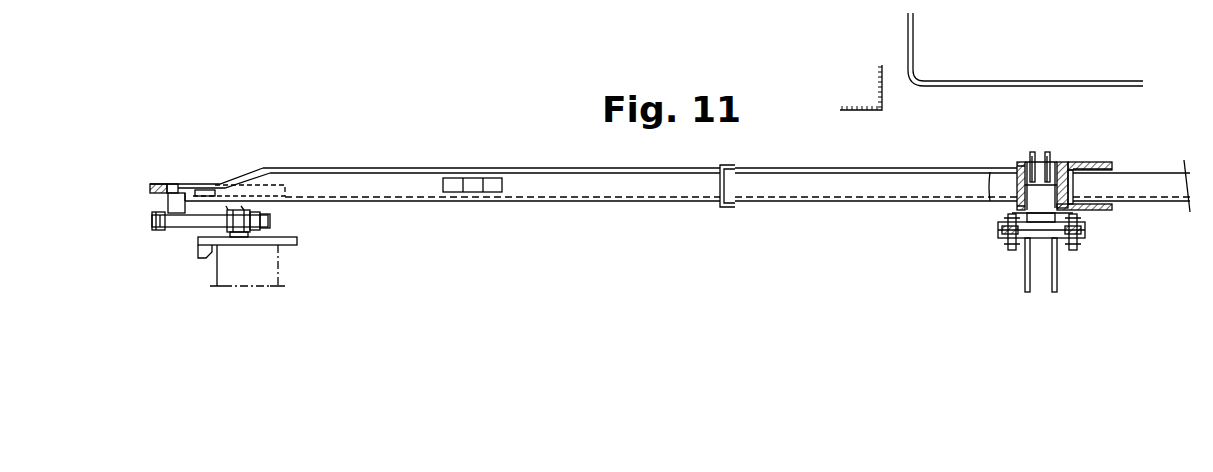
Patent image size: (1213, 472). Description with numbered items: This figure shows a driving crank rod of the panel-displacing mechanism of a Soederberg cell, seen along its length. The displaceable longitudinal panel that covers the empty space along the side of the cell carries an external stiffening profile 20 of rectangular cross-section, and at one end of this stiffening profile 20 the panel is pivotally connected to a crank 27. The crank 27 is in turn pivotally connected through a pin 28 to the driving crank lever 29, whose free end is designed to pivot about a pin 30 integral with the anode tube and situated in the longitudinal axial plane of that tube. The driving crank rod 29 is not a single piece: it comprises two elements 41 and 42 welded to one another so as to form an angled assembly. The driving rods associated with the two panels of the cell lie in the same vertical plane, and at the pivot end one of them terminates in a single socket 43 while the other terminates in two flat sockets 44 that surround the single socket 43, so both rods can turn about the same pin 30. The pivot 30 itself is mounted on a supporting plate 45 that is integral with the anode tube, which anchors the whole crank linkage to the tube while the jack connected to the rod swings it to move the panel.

The stiffening profile 20 is at (280, 256).
The crank 27 is at (207, 220).
The pin 28 is at (173, 202).
The driving crank lever 29 is at (714, 221).
The pin 30 is at (1050, 193).
The element 41 is at (603, 188).
The element 42 is at (780, 188).
The single socket 43 is at (993, 182).
The flat sockets 44 is at (1017, 165).
The supporting plate 45 is at (1083, 226).